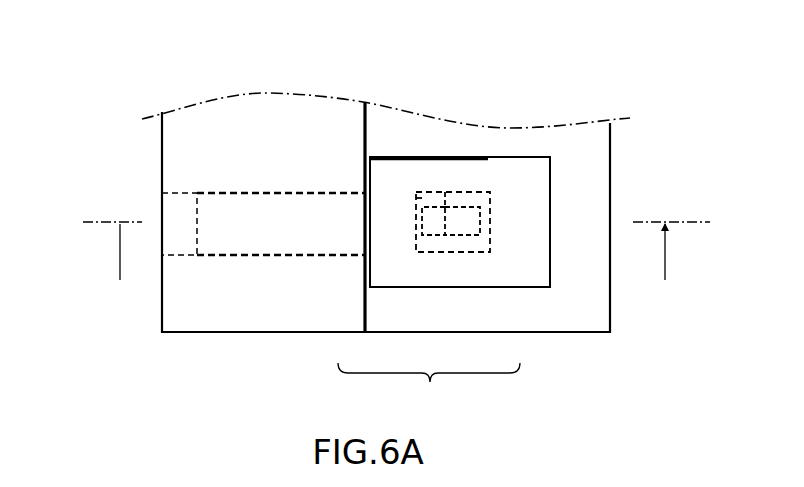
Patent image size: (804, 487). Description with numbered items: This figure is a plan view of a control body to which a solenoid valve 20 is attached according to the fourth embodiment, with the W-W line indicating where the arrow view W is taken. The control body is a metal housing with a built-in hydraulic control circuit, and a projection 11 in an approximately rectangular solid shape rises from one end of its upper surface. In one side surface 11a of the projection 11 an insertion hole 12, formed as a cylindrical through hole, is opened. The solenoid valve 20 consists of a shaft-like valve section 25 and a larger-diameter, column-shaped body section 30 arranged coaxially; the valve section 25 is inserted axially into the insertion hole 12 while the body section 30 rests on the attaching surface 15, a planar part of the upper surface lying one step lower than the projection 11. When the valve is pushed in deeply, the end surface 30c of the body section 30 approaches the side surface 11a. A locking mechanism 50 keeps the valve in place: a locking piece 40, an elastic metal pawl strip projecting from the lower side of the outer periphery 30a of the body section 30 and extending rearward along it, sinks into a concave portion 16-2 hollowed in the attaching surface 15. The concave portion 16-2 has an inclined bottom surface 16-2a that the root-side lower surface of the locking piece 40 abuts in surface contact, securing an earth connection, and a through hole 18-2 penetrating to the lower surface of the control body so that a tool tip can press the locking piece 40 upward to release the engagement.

The projection 11 is at (265, 121).
The side surface 11a is at (371, 111).
The insertion hole 12 is at (179, 204).
The attaching surface 15 is at (585, 318).
The solenoid valve 20 is at (462, 151).
The valve section 25 is at (287, 211).
The body section 30 is at (512, 172).
The outer periphery 30a is at (542, 163).
The end surface 30c is at (370, 157).
The concave portion 16-2 is at (417, 242).
The bottom surface 16-2a is at (418, 203).
The through hole 18-2 is at (477, 236).
The locking piece 40 is at (436, 228).
The locking mechanism 50 is at (429, 387).
The W-W arrow view line W is at (396, 264).